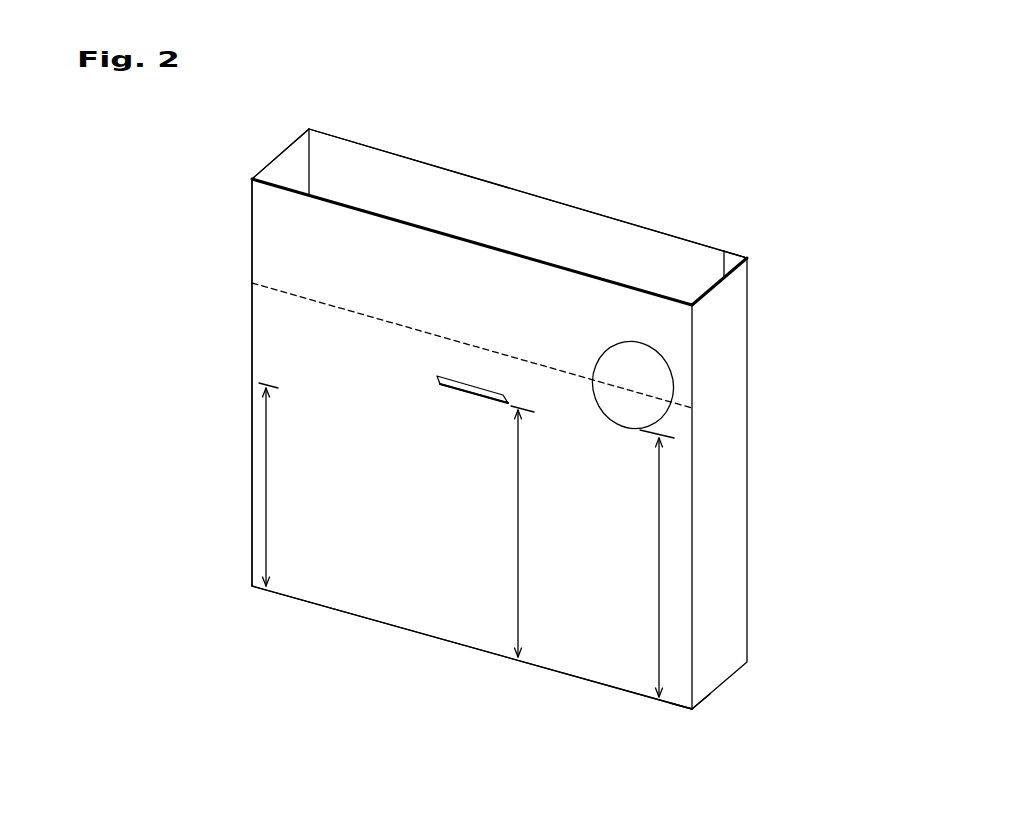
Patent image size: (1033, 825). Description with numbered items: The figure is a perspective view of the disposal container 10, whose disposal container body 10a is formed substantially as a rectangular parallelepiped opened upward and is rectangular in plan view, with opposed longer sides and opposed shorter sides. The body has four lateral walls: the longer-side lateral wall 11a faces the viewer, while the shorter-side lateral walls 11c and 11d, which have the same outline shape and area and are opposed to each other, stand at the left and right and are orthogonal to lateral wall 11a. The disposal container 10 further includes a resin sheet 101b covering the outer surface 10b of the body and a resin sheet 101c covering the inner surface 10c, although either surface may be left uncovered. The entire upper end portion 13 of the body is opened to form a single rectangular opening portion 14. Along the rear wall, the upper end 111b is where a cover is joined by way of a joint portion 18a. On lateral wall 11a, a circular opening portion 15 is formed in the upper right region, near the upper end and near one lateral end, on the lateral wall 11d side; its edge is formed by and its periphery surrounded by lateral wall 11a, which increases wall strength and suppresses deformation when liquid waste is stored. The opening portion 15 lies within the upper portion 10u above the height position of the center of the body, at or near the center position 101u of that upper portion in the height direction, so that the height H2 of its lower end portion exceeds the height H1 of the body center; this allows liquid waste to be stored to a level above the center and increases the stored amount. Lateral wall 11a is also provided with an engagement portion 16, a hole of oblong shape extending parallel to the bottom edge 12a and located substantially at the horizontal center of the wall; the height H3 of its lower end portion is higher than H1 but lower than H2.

The disposal container 10 is at (492, 426).
The disposal container body 10a is at (533, 188).
The outer surface 10b is at (424, 446).
The inner surface 10c is at (534, 194).
The upper portion 10u is at (243, 180).
The lateral wall 11a is at (465, 625).
The lateral wall 11c is at (250, 543).
The lateral wall 11d is at (722, 567).
The bottom edge 12a is at (677, 713).
The upper end portion 13 is at (294, 140).
The opening portion 14 is at (398, 168).
The opening portion 15 is at (606, 400).
The engagement portion 16 is at (465, 392).
The joint portion 18a is at (462, 172).
The resin sheet 101b is at (368, 575).
The resin sheet 101c is at (647, 256).
The center position 101u is at (365, 315).
The upper end 111b is at (735, 253).
The height of the center H1 is at (281, 484).
The height of lower end portion of opening portion H2 is at (651, 563).
The height of lower end portion of engagement portion H3 is at (533, 531).